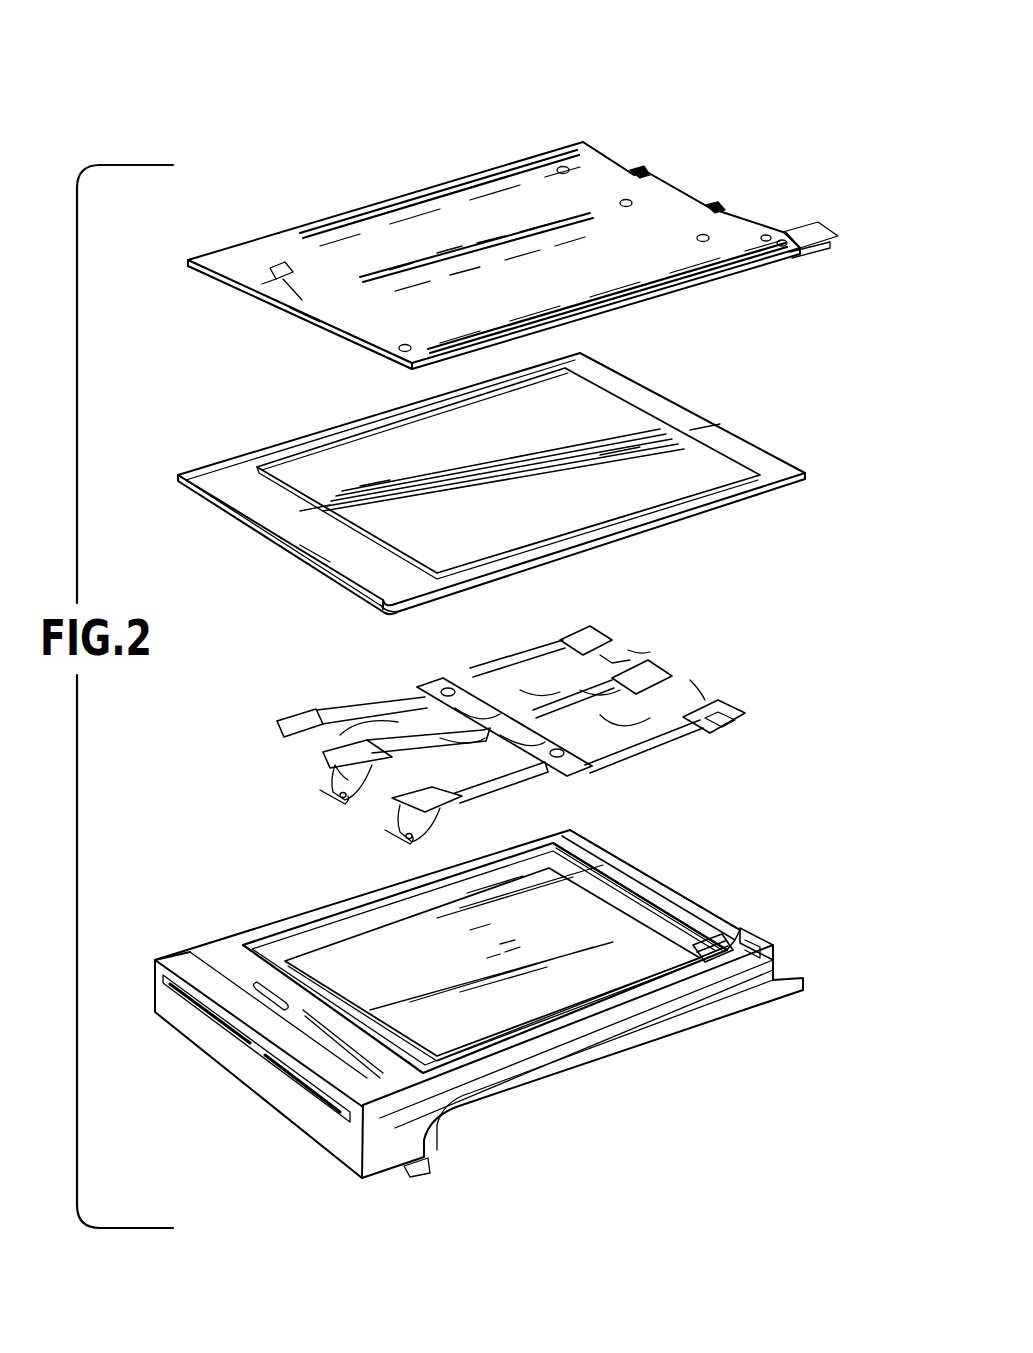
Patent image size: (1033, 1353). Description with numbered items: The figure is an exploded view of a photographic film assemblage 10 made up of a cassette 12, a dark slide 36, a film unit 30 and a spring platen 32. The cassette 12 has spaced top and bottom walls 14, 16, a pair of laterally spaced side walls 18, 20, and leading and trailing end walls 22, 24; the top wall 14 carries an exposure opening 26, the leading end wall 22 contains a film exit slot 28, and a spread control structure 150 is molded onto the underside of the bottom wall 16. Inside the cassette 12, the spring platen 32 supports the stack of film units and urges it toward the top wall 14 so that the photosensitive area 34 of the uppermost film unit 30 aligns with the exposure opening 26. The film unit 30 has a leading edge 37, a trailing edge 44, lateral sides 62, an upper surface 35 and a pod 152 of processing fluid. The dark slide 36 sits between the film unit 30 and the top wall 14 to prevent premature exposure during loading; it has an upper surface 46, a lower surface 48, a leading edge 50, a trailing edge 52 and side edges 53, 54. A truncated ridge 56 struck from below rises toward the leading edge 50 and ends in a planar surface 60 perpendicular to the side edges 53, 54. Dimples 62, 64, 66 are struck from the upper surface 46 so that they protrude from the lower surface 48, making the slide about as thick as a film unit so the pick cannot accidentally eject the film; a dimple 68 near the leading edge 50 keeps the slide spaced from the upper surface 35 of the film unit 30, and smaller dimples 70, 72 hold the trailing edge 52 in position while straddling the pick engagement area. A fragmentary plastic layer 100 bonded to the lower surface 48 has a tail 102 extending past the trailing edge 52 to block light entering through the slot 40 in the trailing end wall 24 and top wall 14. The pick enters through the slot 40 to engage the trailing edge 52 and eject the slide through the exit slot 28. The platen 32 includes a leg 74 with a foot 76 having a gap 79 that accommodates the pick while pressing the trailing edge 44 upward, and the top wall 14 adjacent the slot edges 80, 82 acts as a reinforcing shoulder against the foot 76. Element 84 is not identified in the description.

The photographic film assemblage 10 is at (710, 78).
The cassette 12 is at (174, 1044).
The top wall 14 is at (592, 860).
The bottom wall 16 is at (632, 1053).
The side wall 18 is at (378, 920).
The side wall 20 is at (555, 1052).
The leading end wall 22 is at (240, 1055).
The trailing end wall 24 is at (660, 873).
The exposure opening 26 is at (613, 953).
The film exit slot 28 is at (316, 1100).
The film unit 30 is at (726, 412).
The spring platen 32 is at (686, 645).
The photosensitive area 34 is at (528, 432).
The upper surface 35 is at (350, 556).
The dark slide 36 is at (705, 158).
The leading edge 37 is at (228, 505).
The slot 40 is at (745, 930).
The trailing edge 44 is at (780, 447).
The upper surface 46 is at (443, 236).
The lower surface 48 is at (342, 350).
The leading edge 50 is at (302, 316).
The trailing edge 52 is at (676, 192).
The side edge 53 is at (418, 192).
The side edge 54 is at (661, 296).
The truncated ridge 56 is at (285, 266).
The planar surface 60 is at (264, 287).
The dimple 62 is at (697, 240).
The dimple 64 is at (622, 212).
The dimple 66 is at (560, 176).
The dimple 68 is at (410, 344).
The dimple 70 is at (784, 237).
The dimple 72 is at (766, 230).
The leg 74 is at (555, 684).
The foot 76 is at (600, 640).
The gap 79 is at (722, 712).
The slot edge 80 is at (694, 958).
The slot edge 82 is at (750, 940).
The tab 84 is at (300, 294).
The fragmentary plastic layer 100 is at (800, 260).
The tail 102 is at (820, 232).
The spread control structure 150 is at (432, 1165).
The pod 152 is at (412, 603).